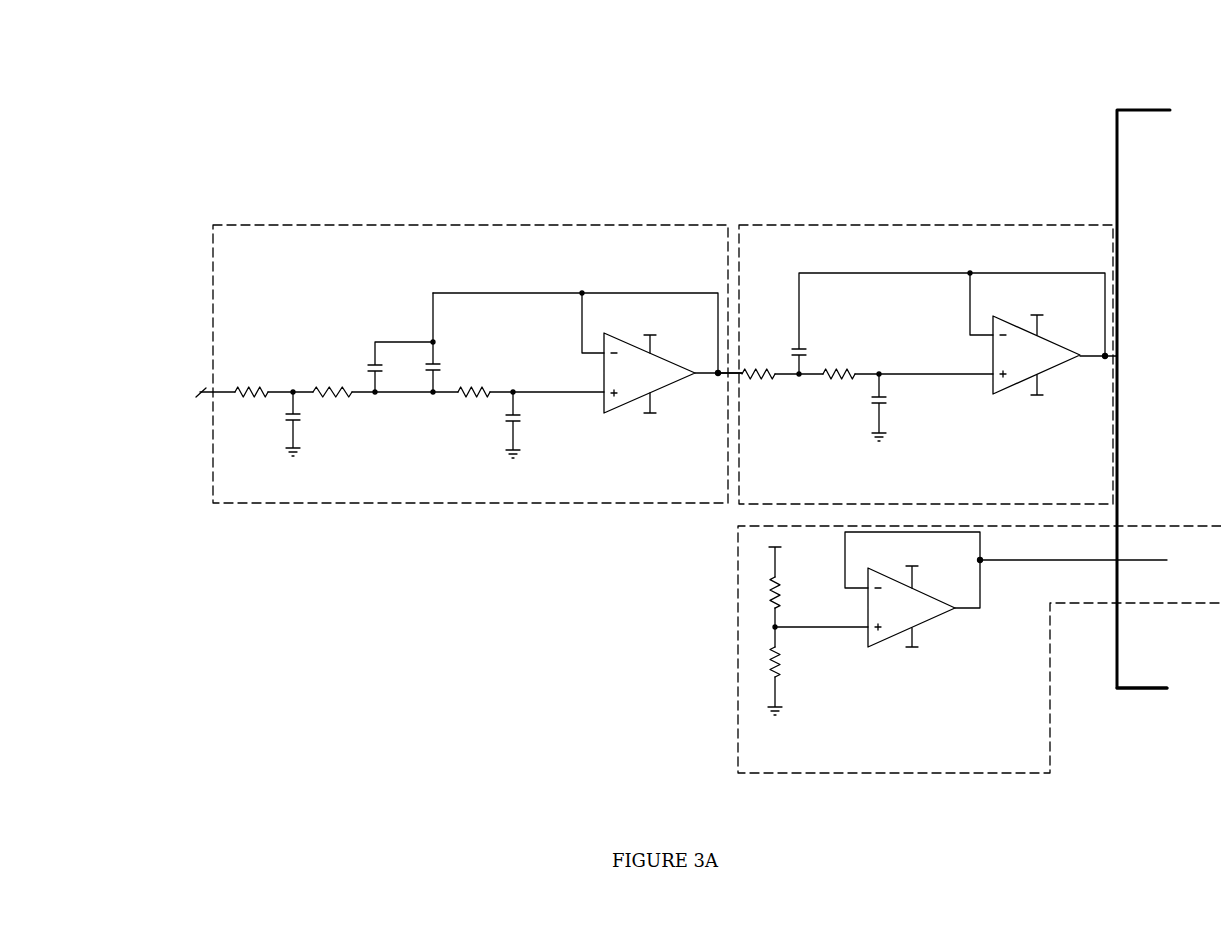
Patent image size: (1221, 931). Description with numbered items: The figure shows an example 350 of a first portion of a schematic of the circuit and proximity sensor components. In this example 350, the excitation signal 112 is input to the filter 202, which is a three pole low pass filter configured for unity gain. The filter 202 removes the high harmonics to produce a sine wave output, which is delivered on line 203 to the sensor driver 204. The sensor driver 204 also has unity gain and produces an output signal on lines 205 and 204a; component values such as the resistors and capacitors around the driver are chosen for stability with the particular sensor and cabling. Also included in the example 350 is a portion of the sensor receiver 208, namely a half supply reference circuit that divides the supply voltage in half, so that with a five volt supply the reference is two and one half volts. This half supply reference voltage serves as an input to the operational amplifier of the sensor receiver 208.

The example 350 is at (222, 76).
The excitation signal 112 is at (213, 393).
The filter 202 is at (350, 225).
The line 203 is at (728, 372).
The sensor driver 204 is at (812, 227).
The line 204a is at (1145, 688).
The line 205 is at (1117, 182).
The sensor receiver 208 is at (880, 773).